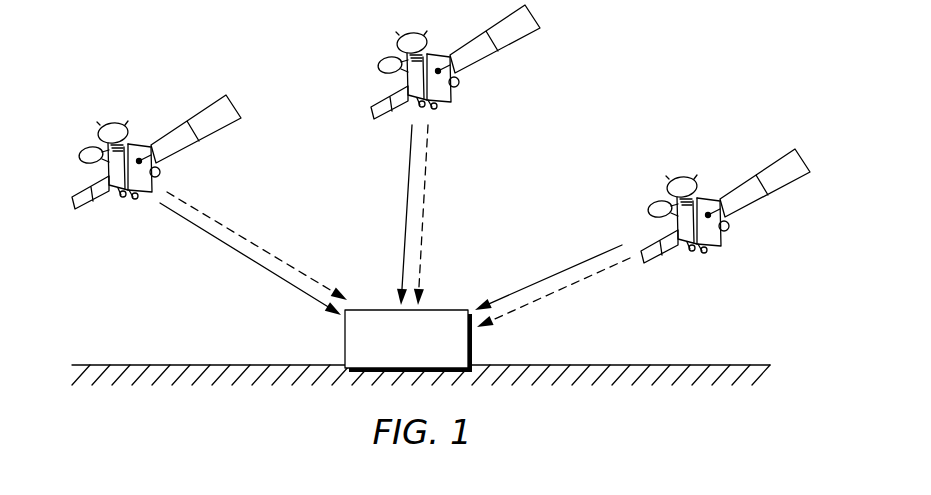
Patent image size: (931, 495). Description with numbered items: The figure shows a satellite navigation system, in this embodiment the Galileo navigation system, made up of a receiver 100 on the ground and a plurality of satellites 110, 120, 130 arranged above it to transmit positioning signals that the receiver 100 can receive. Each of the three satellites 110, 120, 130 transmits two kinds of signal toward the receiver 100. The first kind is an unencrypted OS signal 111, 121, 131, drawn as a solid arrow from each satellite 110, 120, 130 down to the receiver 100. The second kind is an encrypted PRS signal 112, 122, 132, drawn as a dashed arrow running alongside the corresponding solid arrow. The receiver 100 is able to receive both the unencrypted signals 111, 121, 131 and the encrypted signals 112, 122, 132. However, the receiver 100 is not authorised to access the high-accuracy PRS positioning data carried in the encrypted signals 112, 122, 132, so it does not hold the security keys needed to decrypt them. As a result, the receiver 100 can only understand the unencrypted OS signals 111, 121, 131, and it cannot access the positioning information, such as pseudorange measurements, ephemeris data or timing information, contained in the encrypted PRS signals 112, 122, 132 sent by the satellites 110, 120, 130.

The receiver 100 is at (427, 353).
The satellite 110 is at (127, 122).
The unencrypted OS signal 111 is at (183, 218).
The encrypted PRS signal 112 is at (212, 219).
The satellite 120 is at (398, 55).
The unencrypted OS signal 121 is at (409, 171).
The encrypted PRS signal 122 is at (426, 160).
The satellite 130 is at (707, 186).
The unencrypted OS signal 131 is at (560, 272).
The encrypted PRS signal 132 is at (582, 280).